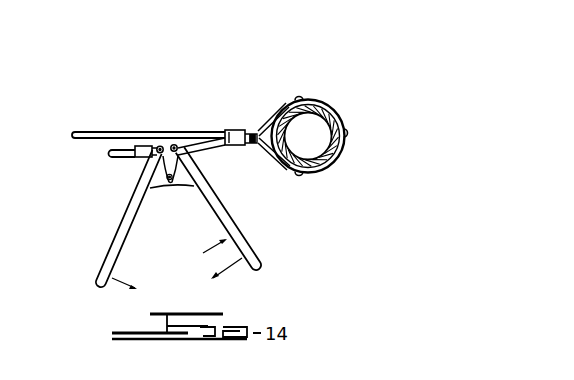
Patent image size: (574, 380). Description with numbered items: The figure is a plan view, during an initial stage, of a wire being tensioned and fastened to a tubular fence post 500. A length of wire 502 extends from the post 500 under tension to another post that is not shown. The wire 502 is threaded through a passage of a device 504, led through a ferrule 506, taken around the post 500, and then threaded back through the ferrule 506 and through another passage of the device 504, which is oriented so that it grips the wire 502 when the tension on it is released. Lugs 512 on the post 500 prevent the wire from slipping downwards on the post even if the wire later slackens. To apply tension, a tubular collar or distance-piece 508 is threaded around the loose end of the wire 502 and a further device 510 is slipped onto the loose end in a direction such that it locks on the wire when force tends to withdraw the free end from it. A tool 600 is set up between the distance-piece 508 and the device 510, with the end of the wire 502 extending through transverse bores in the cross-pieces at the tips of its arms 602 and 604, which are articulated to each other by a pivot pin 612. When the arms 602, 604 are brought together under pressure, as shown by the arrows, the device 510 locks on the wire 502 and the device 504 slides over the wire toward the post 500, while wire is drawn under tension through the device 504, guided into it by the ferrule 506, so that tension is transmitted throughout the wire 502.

The tubular fence post 500 is at (323, 108).
The wire 502 is at (97, 132).
The device 504 is at (235, 130).
The ferrule 506 is at (253, 142).
The tubular collar or distance-piece 508 is at (203, 150).
The further device 510 is at (145, 155).
The lugs 512 is at (350, 135).
The tool 600 is at (177, 264).
The arm 602 is at (262, 260).
The arm 604 is at (108, 249).
The pivot pin 612 is at (170, 181).